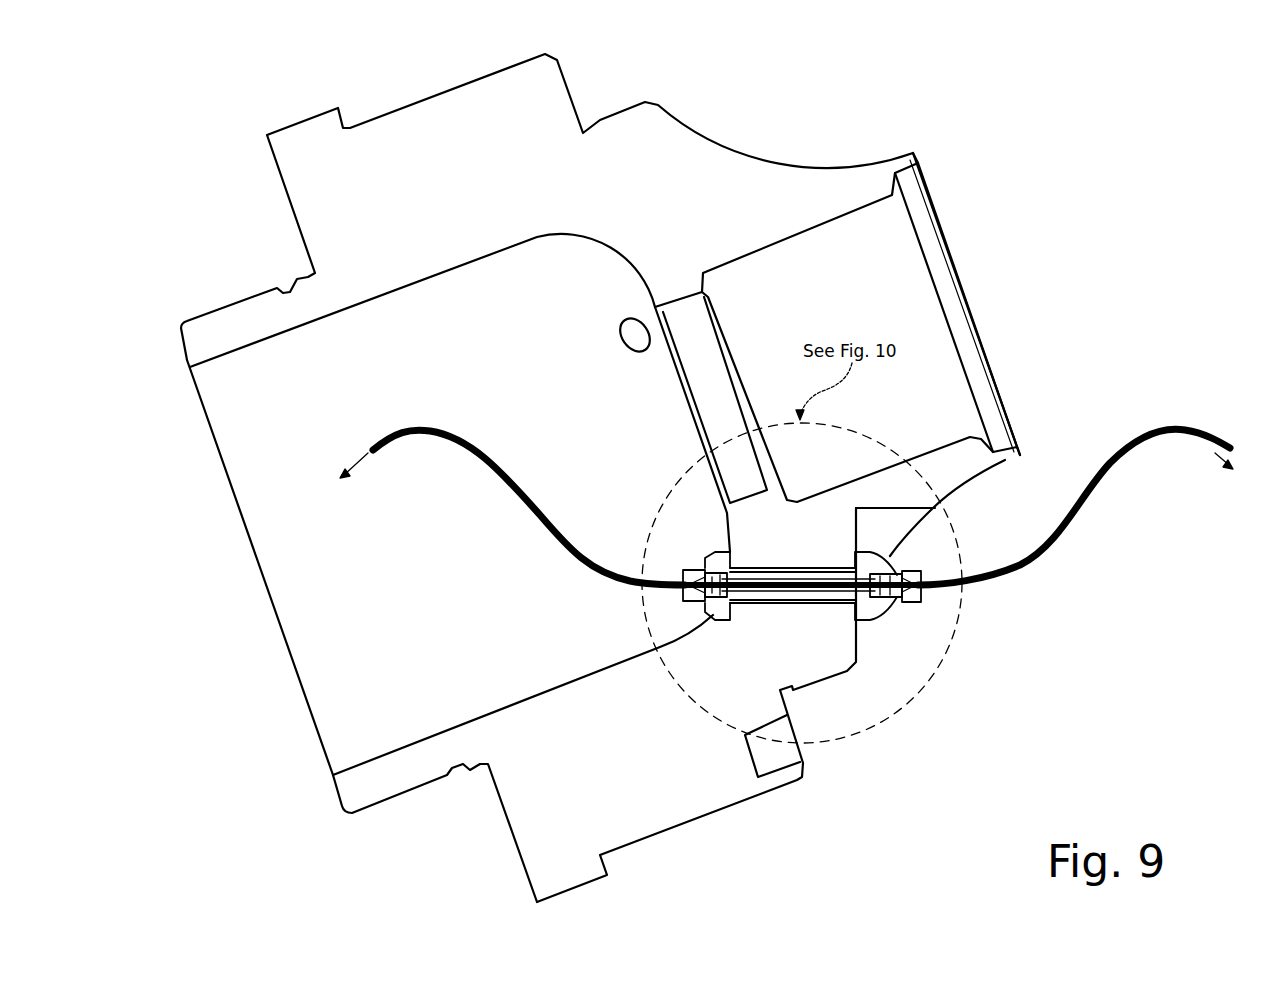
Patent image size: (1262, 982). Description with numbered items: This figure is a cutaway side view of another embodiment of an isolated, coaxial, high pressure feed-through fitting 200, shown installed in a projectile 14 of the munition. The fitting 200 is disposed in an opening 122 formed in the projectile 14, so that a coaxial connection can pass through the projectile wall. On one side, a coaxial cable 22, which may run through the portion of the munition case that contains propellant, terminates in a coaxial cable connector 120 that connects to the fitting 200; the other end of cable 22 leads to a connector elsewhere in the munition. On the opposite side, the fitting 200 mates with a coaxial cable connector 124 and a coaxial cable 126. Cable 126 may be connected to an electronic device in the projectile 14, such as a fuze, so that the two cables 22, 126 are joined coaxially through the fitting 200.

The projectile 14 is at (659, 148).
The coaxial cable 22 is at (1038, 557).
The coaxial cable connector 120 is at (913, 568).
The opening 122 is at (790, 604).
The coaxial cable connector 124 is at (693, 568).
The coaxial cable 126 is at (527, 503).
The feed-through fitting 200 is at (854, 614).